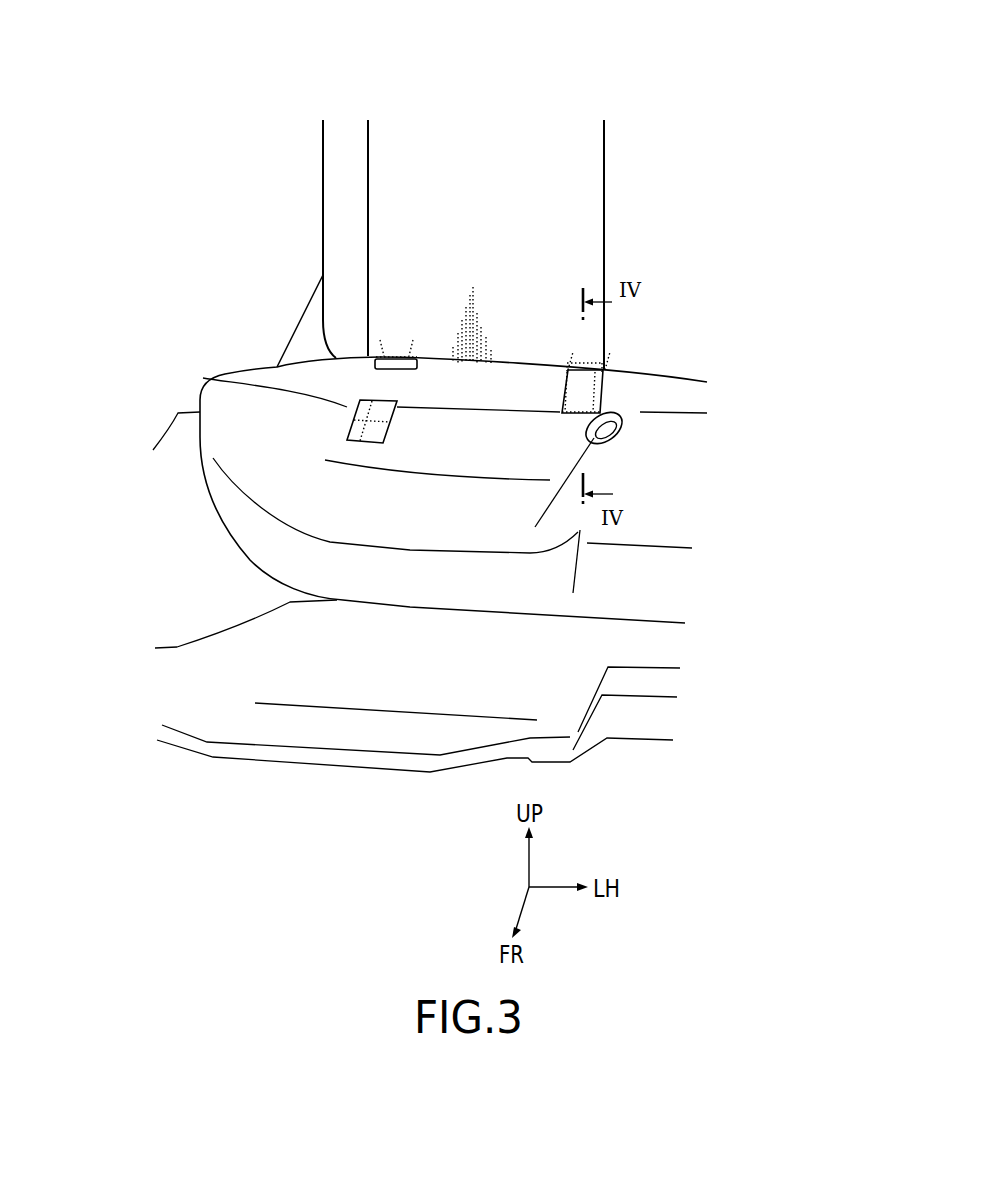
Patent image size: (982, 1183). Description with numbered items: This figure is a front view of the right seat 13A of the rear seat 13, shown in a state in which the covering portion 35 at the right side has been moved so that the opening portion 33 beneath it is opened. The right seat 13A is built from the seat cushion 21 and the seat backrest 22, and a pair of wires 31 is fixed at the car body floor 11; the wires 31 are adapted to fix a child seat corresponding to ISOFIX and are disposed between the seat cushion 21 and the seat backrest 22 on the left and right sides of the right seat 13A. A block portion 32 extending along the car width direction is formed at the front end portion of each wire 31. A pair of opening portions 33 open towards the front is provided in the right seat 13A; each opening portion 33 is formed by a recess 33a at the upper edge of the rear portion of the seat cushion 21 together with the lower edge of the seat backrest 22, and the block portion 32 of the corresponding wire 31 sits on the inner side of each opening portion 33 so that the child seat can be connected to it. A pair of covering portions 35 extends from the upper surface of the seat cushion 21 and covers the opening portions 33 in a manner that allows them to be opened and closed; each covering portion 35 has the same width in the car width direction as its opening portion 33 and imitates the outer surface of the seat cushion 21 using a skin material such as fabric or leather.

The car body floor 11 is at (277, 647).
The seat 13 is at (257, 239).
The right seat 13A is at (316, 178).
The seat cushion 21 is at (267, 463).
The seat backrest 22 is at (471, 140).
The wire 31 is at (558, 278).
The block portion 32 is at (403, 353).
The opening portion 33 is at (570, 372).
The recess 33a is at (390, 362).
The covering portion 35 is at (363, 413).